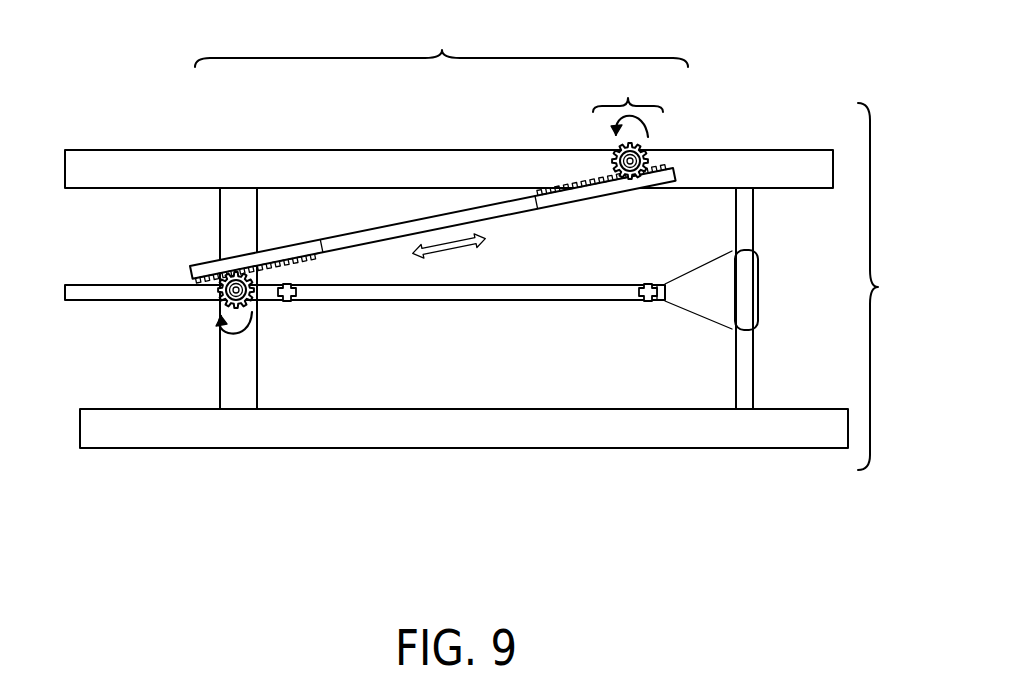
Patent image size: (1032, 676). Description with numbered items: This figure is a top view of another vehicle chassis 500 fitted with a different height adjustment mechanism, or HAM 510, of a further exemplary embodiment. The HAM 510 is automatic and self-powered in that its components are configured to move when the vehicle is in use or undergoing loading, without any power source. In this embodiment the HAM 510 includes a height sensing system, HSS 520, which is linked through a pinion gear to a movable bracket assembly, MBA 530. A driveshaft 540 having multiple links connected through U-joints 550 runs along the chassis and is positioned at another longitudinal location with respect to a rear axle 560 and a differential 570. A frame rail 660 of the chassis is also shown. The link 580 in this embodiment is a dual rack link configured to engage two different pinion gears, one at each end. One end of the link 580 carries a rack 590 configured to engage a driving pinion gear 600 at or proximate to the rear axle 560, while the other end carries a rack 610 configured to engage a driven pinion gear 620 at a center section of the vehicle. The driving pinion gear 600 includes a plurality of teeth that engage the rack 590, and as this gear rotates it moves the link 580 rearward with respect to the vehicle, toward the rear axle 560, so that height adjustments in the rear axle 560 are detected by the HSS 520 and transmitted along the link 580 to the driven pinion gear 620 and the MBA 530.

The vehicle chassis 500 is at (891, 286).
The height adjustment mechanism 510 is at (441, 44).
The height sensing system 520 is at (628, 90).
The movable bracket assembly 530 is at (200, 318).
The driveshaft 540 is at (442, 292).
The U-joints 550 is at (287, 303).
The rear axle 560 is at (753, 218).
The differential 570 is at (758, 290).
The link 580 is at (404, 230).
The rack 590 is at (590, 205).
The driving pinion gear 600 is at (652, 148).
The rack 610 is at (238, 258).
The driven pinion gear 620 is at (220, 290).
The frame rail 660 is at (780, 160).